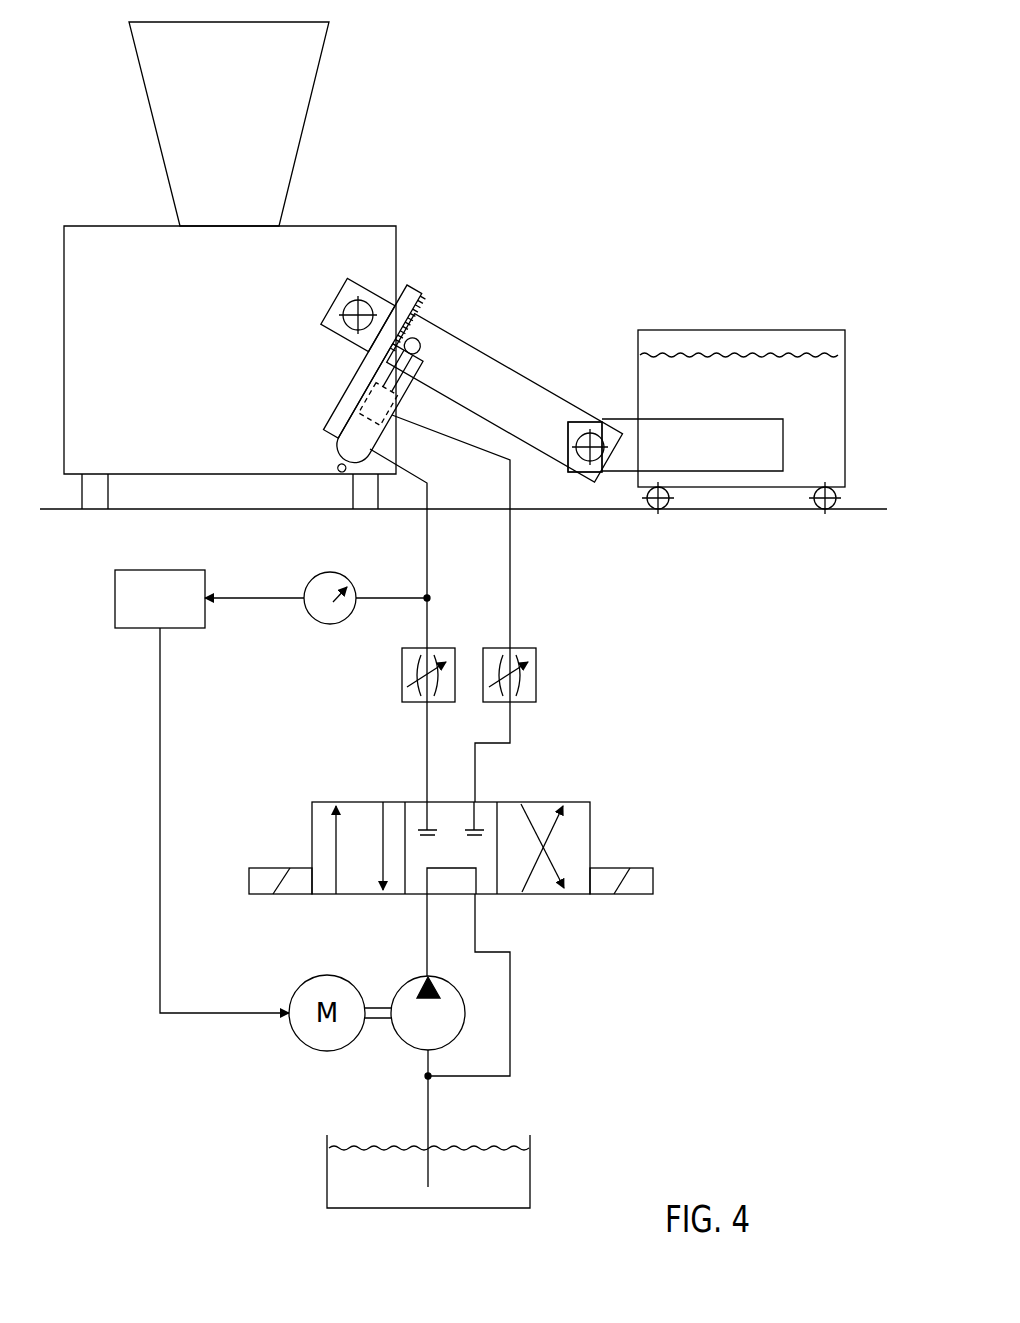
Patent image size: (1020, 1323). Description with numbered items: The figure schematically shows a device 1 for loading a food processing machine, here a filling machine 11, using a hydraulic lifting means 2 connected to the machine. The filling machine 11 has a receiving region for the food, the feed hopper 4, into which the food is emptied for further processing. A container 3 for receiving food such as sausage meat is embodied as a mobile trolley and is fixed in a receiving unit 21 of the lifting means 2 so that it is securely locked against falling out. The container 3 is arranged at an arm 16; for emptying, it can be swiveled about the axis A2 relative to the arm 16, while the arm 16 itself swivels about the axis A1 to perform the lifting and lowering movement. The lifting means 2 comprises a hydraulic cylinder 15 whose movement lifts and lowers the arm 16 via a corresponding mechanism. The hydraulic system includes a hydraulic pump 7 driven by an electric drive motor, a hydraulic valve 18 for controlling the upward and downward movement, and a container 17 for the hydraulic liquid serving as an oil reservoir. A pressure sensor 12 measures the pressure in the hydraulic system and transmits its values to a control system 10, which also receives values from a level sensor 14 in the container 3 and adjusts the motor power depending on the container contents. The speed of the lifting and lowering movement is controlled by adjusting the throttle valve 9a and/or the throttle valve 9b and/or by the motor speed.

The system for processing material 1 is at (437, 78).
The lifting means 2 is at (418, 318).
The container 3 is at (716, 333).
The feed hopper 4 is at (318, 90).
The hydraulic pump 7 is at (398, 983).
The throttle valve 9a is at (402, 684).
The throttle valve 9b is at (537, 685).
The control system 10 is at (175, 613).
The filling machine 11 is at (102, 237).
The pressure sensor 12 is at (318, 573).
The level sensor 14 is at (847, 388).
The hydraulic cylinder 15 is at (398, 428).
The arm 16 is at (540, 385).
The container for the hydraulic liquid 17 is at (532, 1175).
The hydraulic valve 18 is at (592, 815).
The receiving unit 21 is at (612, 420).
The axis A1 is at (333, 303).
The axis A2 is at (597, 487).